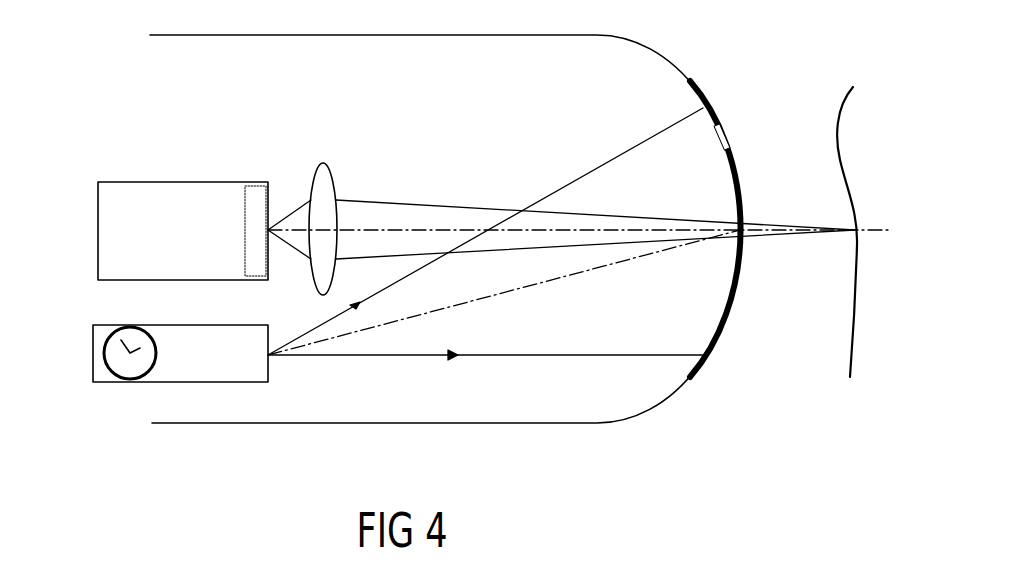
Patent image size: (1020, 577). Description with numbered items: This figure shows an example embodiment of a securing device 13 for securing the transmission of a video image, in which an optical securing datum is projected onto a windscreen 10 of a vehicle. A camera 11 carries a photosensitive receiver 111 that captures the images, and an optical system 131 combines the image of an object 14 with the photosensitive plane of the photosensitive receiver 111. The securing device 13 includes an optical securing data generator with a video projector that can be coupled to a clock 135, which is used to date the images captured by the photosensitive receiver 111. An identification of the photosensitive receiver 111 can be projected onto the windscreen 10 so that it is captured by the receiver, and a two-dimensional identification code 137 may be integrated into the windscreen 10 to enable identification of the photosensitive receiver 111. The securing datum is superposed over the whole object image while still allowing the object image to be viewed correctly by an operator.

The windscreen 10 is at (731, 318).
The camera 11 is at (183, 231).
The photosensitive receiver 111 is at (253, 182).
The optical system 131 is at (323, 163).
The two-dimensional identification code 137 is at (733, 137).
The object 14 is at (843, 153).
The securing device 13 is at (180, 353).
The clock 135 is at (155, 366).